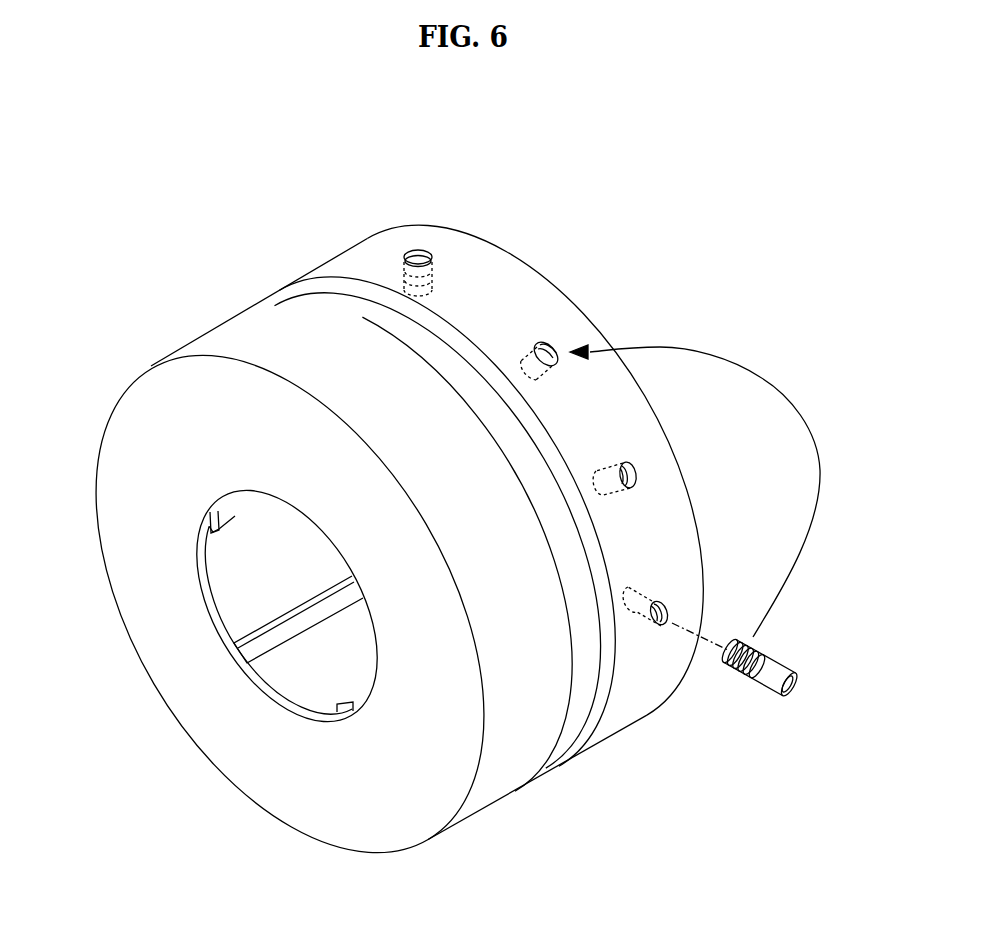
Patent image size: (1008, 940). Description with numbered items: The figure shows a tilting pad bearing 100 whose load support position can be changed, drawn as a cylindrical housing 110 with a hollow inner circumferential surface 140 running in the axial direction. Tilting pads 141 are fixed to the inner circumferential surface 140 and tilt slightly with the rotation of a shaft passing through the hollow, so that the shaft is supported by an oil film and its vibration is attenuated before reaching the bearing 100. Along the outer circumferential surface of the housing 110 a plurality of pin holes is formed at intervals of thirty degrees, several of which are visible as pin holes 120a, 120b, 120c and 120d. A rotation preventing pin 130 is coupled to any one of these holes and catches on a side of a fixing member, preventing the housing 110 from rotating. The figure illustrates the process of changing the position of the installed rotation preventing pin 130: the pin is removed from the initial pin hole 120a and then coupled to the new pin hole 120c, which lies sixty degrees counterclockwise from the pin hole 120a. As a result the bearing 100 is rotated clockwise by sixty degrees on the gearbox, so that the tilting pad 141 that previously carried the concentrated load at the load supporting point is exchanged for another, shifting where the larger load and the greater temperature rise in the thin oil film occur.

The bearing 100 is at (439, 537).
The housing 110 is at (547, 300).
The initial pin hole 120a is at (663, 624).
The pin hole 120b is at (633, 477).
The new pin hole 120c is at (554, 348).
The pin hole 120d is at (420, 256).
The rotation preventing pin 130 is at (768, 668).
The inner circumferential surface 140 is at (243, 650).
The tilting pad 141 is at (240, 590).